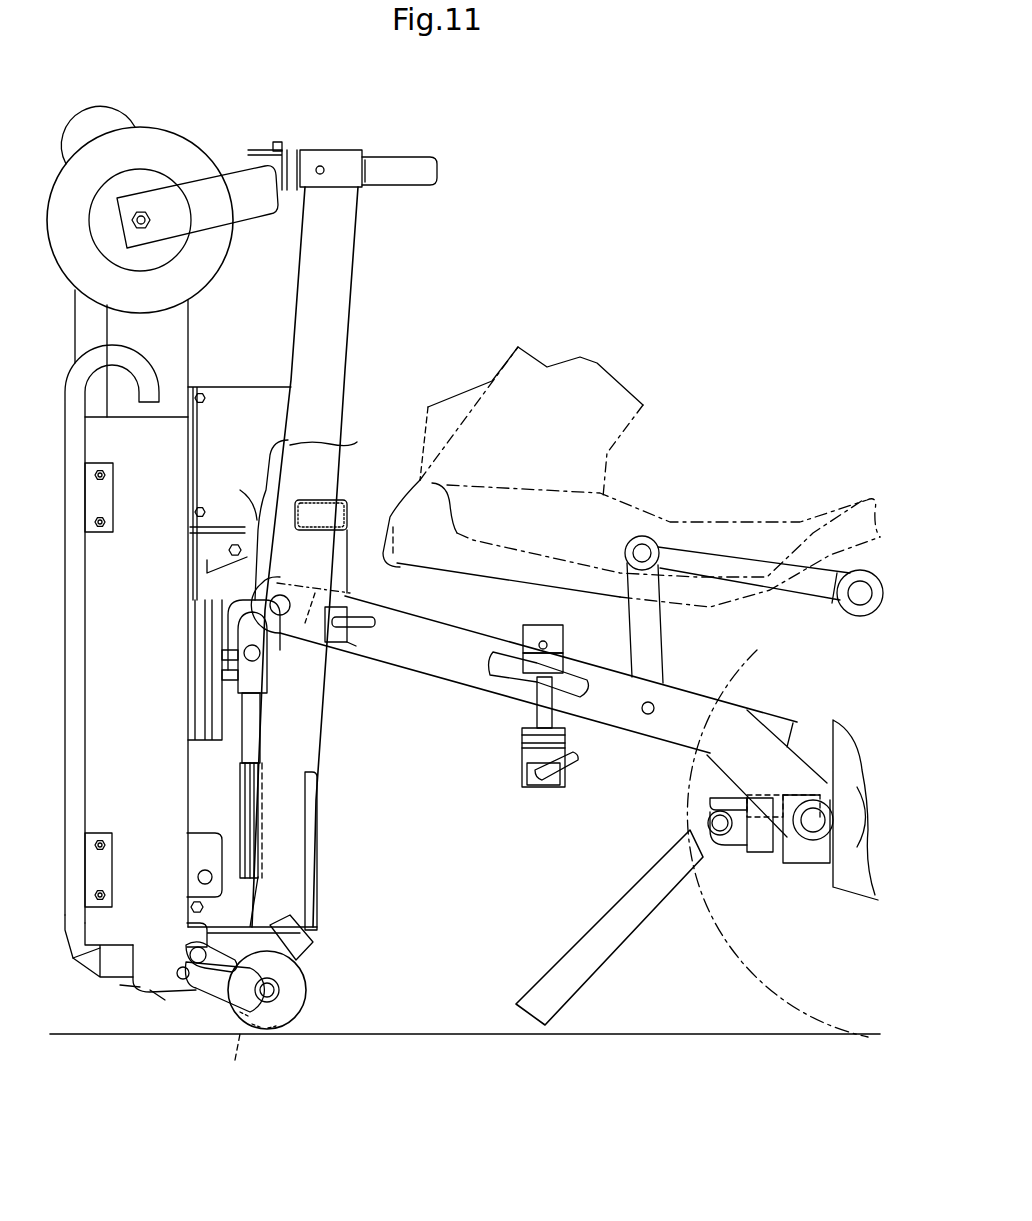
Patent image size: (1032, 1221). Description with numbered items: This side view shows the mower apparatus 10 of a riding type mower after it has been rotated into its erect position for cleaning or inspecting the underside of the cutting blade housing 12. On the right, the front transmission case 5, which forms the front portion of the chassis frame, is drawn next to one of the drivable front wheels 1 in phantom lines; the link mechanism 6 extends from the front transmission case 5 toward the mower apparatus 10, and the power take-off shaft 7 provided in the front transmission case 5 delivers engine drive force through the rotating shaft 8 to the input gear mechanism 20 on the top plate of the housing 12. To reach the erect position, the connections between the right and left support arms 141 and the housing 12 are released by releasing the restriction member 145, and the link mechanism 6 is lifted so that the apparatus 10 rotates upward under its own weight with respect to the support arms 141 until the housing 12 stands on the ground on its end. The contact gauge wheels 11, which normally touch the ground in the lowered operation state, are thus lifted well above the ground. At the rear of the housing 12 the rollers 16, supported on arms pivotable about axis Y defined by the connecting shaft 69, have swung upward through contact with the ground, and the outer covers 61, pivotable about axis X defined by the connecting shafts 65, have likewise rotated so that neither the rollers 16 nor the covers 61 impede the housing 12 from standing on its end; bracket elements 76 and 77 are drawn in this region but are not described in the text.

The front wheels 1 is at (712, 920).
The front transmission case 5 is at (860, 883).
The link mechanism 6 is at (474, 712).
The power take-off shaft 7 is at (757, 853).
The rotating shaft 8 is at (240, 822).
The mower apparatus 10 is at (367, 367).
The contact gauge wheels 11 is at (184, 136).
The cutting blade housing 12 is at (192, 345).
The rollers 16 is at (97, 107).
The input gear mechanism 20 is at (267, 513).
The outer covers 61 is at (248, 1065).
The connecting shafts 65 is at (198, 950).
The connecting shaft 69 is at (183, 981).
The wheel bracket 76 is at (300, 947).
The lock clamp 77 is at (390, 617).
The support arms 141 is at (410, 665).
The restriction member 145 is at (523, 762).